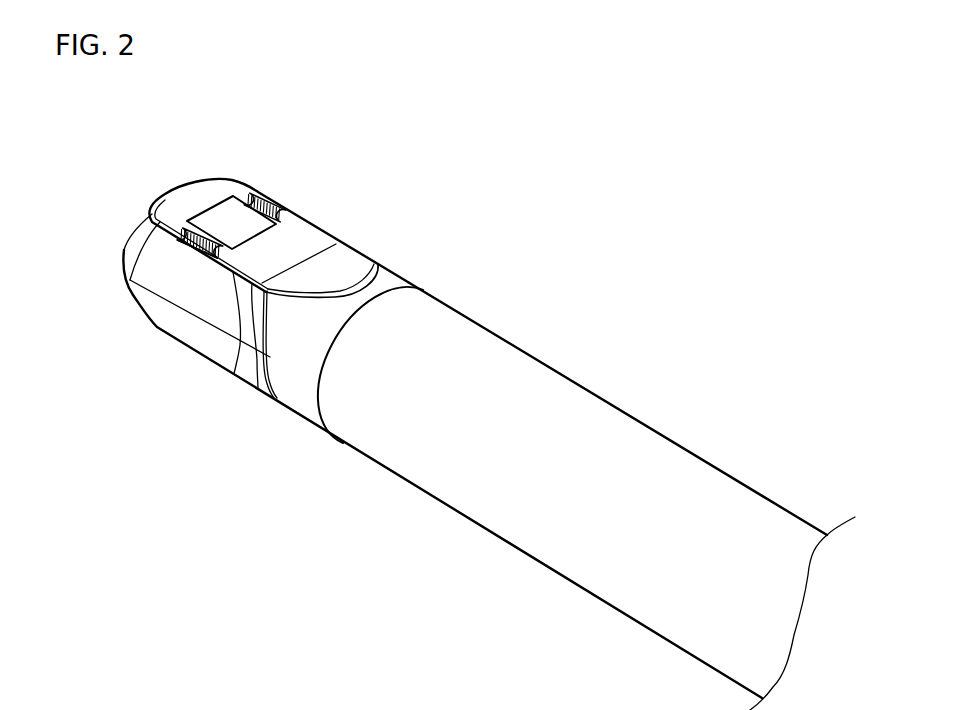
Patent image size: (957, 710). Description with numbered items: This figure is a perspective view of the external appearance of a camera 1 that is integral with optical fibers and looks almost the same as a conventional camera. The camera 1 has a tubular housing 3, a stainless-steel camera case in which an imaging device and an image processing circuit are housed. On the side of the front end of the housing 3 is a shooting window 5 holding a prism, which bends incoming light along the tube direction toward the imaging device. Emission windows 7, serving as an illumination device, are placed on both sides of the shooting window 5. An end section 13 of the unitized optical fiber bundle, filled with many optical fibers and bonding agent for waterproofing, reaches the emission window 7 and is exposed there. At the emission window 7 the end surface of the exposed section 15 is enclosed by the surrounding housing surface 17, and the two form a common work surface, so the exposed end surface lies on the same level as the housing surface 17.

The camera 1 is at (392, 109).
The tubular housing 3 is at (217, 190).
The shooting window 5 is at (215, 218).
The emission windows 7 is at (270, 182).
The end section 13 is at (172, 262).
The exposed section 15 is at (287, 213).
The housing surface 17 is at (297, 243).